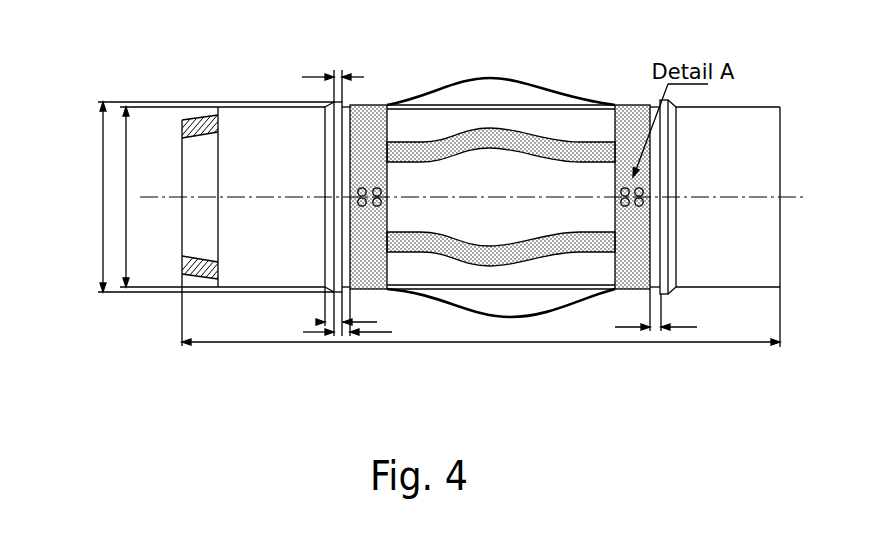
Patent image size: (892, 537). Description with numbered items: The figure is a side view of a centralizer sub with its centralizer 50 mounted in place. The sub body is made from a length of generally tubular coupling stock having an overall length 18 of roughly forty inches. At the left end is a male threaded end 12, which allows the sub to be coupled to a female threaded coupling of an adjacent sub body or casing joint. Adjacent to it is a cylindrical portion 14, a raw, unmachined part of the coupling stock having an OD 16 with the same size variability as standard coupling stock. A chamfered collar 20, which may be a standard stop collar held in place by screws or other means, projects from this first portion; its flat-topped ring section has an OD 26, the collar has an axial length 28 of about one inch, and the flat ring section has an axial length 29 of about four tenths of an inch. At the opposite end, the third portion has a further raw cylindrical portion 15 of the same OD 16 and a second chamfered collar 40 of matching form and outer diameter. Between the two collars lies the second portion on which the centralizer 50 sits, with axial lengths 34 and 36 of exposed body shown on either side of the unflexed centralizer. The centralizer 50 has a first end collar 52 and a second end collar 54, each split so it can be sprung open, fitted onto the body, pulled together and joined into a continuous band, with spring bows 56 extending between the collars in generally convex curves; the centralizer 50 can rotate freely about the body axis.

The male threaded end 12 is at (186, 120).
The cylindrical portion 14 is at (248, 118).
The cylindrical portion 15 is at (735, 107).
The OD 16 is at (118, 220).
The length 18 is at (488, 344).
The chamfered collar 20 is at (331, 101).
The OD 26 is at (100, 176).
The axial length 28 is at (318, 322).
The axial length 29 is at (363, 76).
The axial length 34 is at (372, 334).
The axial length 36 is at (673, 328).
The chamfered collar 40 is at (672, 294).
The centralizer 50 is at (372, 102).
The first end collar 52 is at (390, 106).
The second end collar 54 is at (635, 104).
The spring bows 56 is at (510, 80).